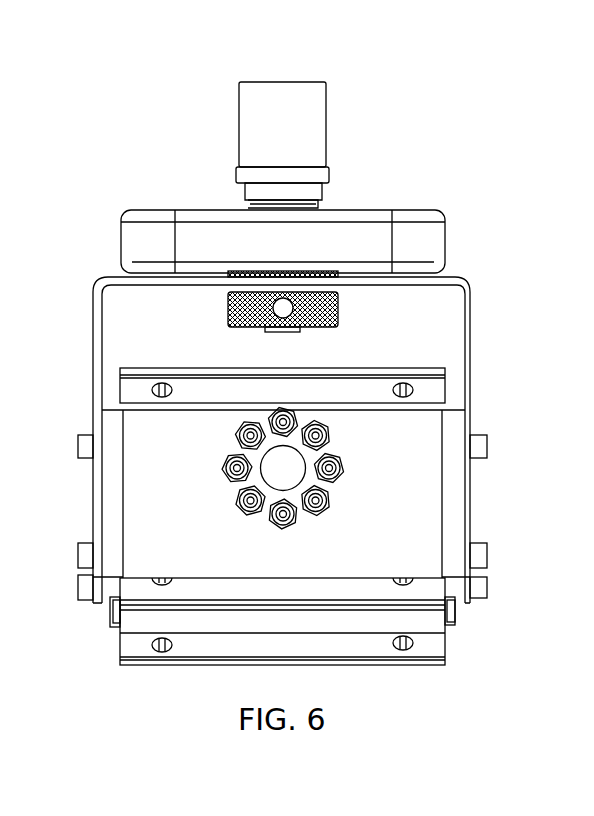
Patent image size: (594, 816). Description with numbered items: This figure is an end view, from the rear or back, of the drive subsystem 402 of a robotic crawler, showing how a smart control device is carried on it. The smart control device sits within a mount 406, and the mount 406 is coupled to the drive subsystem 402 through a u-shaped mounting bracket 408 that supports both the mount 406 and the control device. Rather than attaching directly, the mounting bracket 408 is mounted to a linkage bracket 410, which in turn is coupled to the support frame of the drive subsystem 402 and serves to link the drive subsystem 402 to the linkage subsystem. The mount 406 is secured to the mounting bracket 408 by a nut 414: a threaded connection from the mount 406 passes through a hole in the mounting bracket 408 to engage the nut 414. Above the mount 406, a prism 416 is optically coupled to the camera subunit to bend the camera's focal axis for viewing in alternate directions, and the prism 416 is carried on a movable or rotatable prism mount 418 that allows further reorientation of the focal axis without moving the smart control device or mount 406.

The drive subsystem 402 is at (140, 667).
The mount 406 is at (397, 210).
The mounting bracket 408 is at (472, 317).
The linkage bracket 410 is at (418, 532).
The nut 414 is at (228, 313).
The prism 416 is at (301, 92).
The prism mount 418 is at (330, 167).